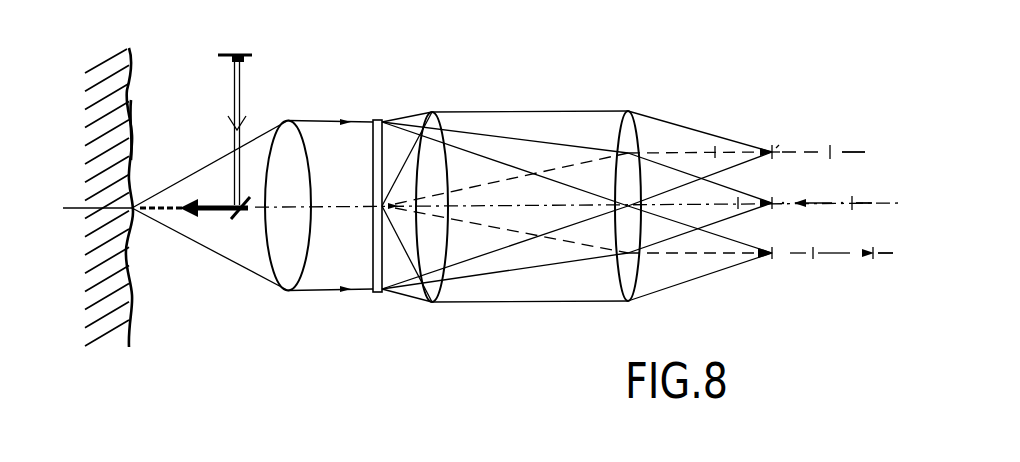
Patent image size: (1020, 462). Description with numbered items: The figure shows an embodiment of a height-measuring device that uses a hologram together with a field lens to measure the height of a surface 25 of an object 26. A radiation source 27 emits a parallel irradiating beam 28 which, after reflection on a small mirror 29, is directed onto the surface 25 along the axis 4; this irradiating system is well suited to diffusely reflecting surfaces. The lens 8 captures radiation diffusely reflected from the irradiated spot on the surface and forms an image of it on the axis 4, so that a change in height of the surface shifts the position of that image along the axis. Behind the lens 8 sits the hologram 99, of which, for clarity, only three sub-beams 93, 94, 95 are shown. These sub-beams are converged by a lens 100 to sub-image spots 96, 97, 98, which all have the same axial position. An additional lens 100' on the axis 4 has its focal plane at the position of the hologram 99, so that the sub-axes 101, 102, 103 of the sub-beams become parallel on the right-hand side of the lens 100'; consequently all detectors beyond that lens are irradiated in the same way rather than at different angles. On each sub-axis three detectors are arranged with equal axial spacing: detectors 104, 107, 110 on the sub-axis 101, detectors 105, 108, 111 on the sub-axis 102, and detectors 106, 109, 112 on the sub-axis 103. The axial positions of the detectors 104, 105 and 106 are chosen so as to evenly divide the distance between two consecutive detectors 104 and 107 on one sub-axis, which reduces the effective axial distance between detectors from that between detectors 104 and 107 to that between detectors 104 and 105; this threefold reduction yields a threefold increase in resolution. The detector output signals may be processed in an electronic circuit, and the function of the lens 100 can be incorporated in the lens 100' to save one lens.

The axis 4 is at (77, 209).
The lens 8 is at (287, 290).
The surface 25 is at (132, 112).
The object 26 is at (107, 110).
The radiation source 27 is at (252, 56).
The parallel irradiating beam 28 is at (240, 100).
The small mirror 29 is at (240, 219).
The sub-beam 93 is at (470, 112).
The sub-beam 94 is at (522, 139).
The sub-beam 95 is at (523, 167).
The sub-image spot 96 is at (771, 150).
The sub-image spot 97 is at (773, 202).
The sub-image spot 98 is at (781, 254).
The hologram 99 is at (378, 293).
The lens 100 is at (415, 231).
The additional lens 100' is at (606, 230).
The sub-axis 101 is at (846, 152).
The sub-axis 102 is at (876, 204).
The sub-axis 103 is at (883, 257).
The detector 104 is at (713, 152).
The detector 105 is at (738, 203).
The detector 106 is at (773, 249).
The detector 107 is at (777, 148).
The detector 108 is at (802, 198).
The detector 109 is at (813, 252).
The detector 110 is at (830, 150).
The detector 111 is at (852, 200).
The detector 112 is at (877, 241).